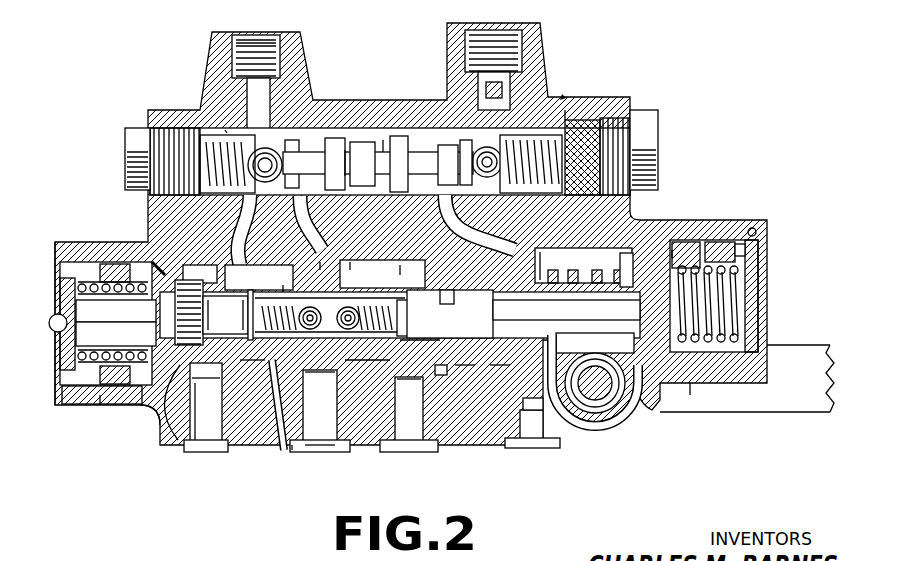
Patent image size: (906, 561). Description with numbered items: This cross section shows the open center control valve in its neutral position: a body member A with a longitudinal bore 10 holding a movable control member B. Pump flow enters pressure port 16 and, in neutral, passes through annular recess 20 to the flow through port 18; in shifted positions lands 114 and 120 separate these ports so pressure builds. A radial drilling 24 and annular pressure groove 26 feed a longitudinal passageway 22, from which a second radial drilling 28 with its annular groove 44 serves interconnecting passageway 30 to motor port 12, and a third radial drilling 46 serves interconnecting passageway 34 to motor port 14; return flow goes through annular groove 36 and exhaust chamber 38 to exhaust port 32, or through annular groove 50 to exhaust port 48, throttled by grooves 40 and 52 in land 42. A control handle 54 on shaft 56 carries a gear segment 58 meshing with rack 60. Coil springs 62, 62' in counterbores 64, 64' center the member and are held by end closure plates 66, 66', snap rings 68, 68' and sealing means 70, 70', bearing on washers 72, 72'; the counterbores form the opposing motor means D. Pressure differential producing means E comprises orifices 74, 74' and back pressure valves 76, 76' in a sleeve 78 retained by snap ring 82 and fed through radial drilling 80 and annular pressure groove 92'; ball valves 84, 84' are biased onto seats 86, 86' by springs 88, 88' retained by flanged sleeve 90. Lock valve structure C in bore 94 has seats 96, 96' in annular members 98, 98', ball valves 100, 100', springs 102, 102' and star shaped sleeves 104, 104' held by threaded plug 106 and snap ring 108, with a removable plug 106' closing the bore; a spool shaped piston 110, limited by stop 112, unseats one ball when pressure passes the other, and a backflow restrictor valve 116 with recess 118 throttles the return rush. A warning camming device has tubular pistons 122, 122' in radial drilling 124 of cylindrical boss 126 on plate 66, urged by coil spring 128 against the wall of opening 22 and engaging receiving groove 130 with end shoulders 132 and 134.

The longitudinally extending chamber or bore 10 is at (672, 388).
The motor port 12 is at (262, 50).
The motor port 14 is at (500, 75).
The pressure port 16 is at (318, 452).
The flow through port 18 is at (412, 452).
The annular recess 20 is at (410, 345).
The longitudinally extending opening or passageway 22 is at (566, 304).
The radial drilling 24 is at (367, 382).
The annular pressure groove 26 is at (320, 385).
The second radial drilling 28 is at (275, 365).
The interconnecting passageway 30 is at (278, 258).
The exhaust port 32 is at (532, 448).
The interconnecting passageway 34 is at (462, 210).
The annular groove 36 is at (564, 266).
The exhaust chamber 38 is at (606, 266).
The throttling groove 40 is at (552, 430).
The land 42 is at (536, 252).
The annular groove 44 is at (247, 382).
The third radial drilling 46 is at (468, 377).
The exhaust port 48 is at (197, 452).
The annular groove 50 is at (206, 388).
The second throttling groove 52 is at (502, 377).
The control handle 54 is at (788, 402).
The shaft 56 is at (602, 395).
The gear segment 58 is at (590, 400).
The rack 60 is at (697, 367).
The coil spring 62 is at (113, 289).
The coil spring 62' is at (744, 304).
The counterbore 64 is at (122, 352).
The counterbore 64' is at (703, 227).
The end closure plate 66 is at (61, 341).
The end closure plate 66' is at (778, 296).
The snap ring 68 is at (100, 425).
The snap ring 68' is at (782, 226).
The sealing means 70 is at (82, 354).
The sealing means 70' is at (754, 227).
The washer 72 is at (134, 435).
The washer 72' is at (701, 415).
The orifice 74 is at (301, 276).
The orifice 74' is at (372, 279).
The back pressure valve 76 is at (225, 315).
The back pressure valve 76' is at (426, 313).
The sleeve 78 is at (420, 326).
The radial drilling 80 is at (329, 316).
The snap ring 82 is at (250, 334).
The ball valve 84 is at (281, 267).
The ball valve 84' is at (405, 250).
The valve seat 86 is at (332, 235).
The valve seat 86' is at (365, 239).
The coil spring 88 is at (259, 277).
The coil spring 88' is at (384, 274).
The flanged sleeve 90 is at (243, 354).
The passage 92' is at (320, 424).
The longitudinal bore 94 is at (383, 130).
The valve seat 96 is at (314, 125).
The valve seat 96' is at (487, 117).
The annular member 98 is at (273, 114).
The annular member 98' is at (518, 190).
The ball valve 100 is at (302, 132).
The ball valve 100' is at (456, 128).
The coil spring 102 is at (201, 138).
The coil spring 102' is at (570, 111).
The star shaped flanged sleeve 104 is at (150, 151).
The star shaped flanged sleeve 104' is at (620, 128).
The threaded plug 106 is at (110, 159).
The removable plug 106' is at (668, 147).
The snap ring 108 is at (572, 105).
The spool shaped piston 110 is at (348, 125).
The stop 112 is at (386, 100).
The land 114 is at (446, 377).
The backflow restrictor valve 116 is at (522, 42).
The recess 118 is at (470, 135).
The land 120 is at (409, 383).
The tubular piston 122 is at (118, 237).
The tubular piston 122' is at (208, 411).
The radial drilling 124 is at (155, 301).
The cylindrical boss 126 is at (116, 333).
The coil spring 128 is at (112, 325).
The receiving groove 130 is at (197, 288).
The end shoulder 132 is at (176, 402).
The end shoulder 134 is at (236, 264).
The body member A is at (562, 98).
The control member B is at (672, 250).
The lock valve structure C is at (227, 133).
The opposing fluid pressure motor means D is at (100, 405).
The pressure differential producing means E is at (292, 450).